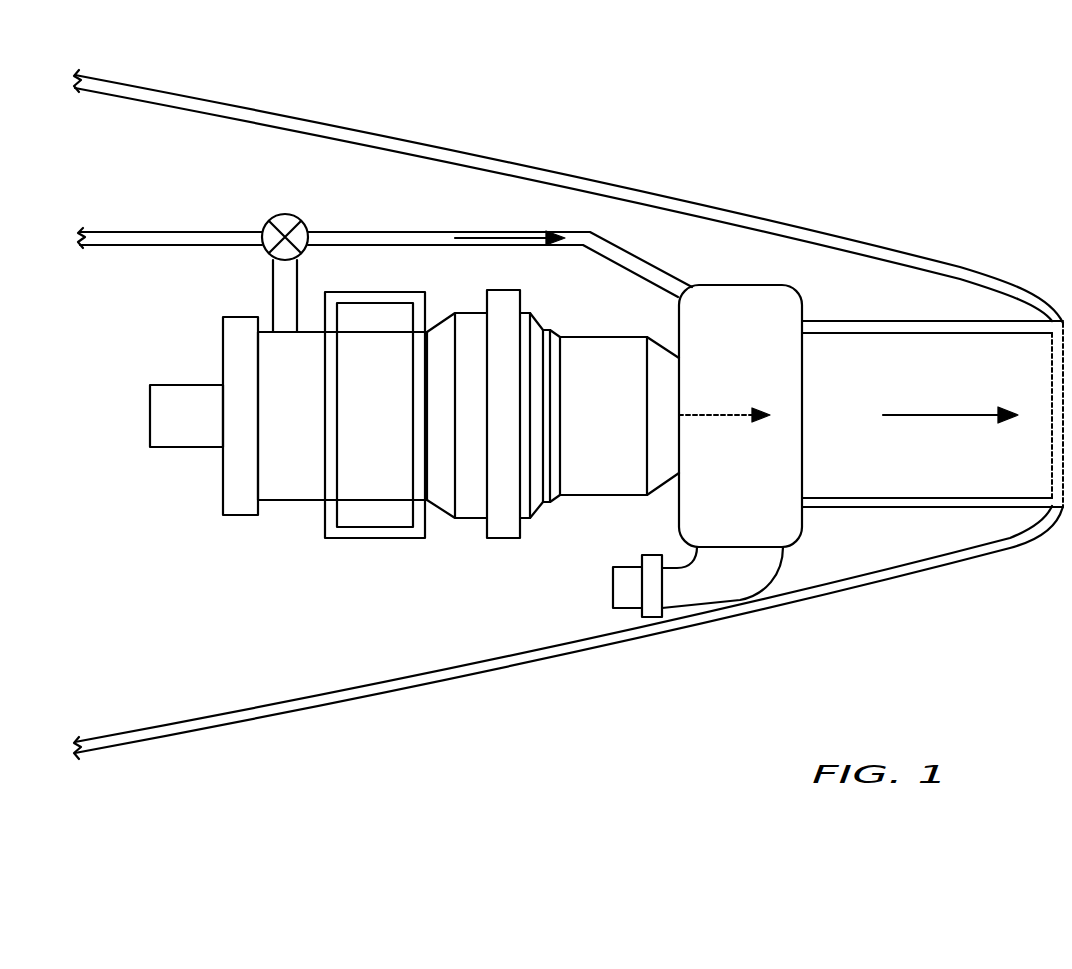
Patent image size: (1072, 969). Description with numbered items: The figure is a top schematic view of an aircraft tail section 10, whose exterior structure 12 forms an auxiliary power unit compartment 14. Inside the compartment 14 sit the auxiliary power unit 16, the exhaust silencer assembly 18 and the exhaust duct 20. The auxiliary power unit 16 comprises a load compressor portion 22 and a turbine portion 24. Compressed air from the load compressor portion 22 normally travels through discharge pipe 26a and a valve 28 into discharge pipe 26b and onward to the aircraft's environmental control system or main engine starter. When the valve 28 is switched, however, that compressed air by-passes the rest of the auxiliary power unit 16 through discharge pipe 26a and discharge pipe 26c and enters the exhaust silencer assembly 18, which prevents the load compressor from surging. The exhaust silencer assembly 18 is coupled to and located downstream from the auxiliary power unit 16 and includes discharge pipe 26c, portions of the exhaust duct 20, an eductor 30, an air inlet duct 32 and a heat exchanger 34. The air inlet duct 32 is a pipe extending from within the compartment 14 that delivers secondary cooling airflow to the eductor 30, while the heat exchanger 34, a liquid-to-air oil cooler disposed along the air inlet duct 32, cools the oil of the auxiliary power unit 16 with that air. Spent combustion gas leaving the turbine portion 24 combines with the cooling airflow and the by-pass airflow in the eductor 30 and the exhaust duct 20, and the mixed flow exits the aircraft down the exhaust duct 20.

The aircraft tail section 10 is at (702, 82).
The exterior structure 12 is at (201, 99).
The auxiliary power unit compartment 14 is at (342, 655).
The auxiliary power unit 16 is at (302, 562).
The exhaust silencer assembly 18 is at (748, 235).
The exhaust duct 20 is at (908, 508).
The load compressor portion 22 is at (292, 502).
The turbine portion 24 is at (537, 320).
The discharge pipe 26a is at (273, 285).
The discharge pipe 26b is at (178, 231).
The discharge pipe 26c is at (498, 233).
The valve 28 is at (301, 214).
The eductor 30 is at (810, 320).
The air inlet duct 32 is at (702, 582).
The heat exchanger 34 is at (652, 555).